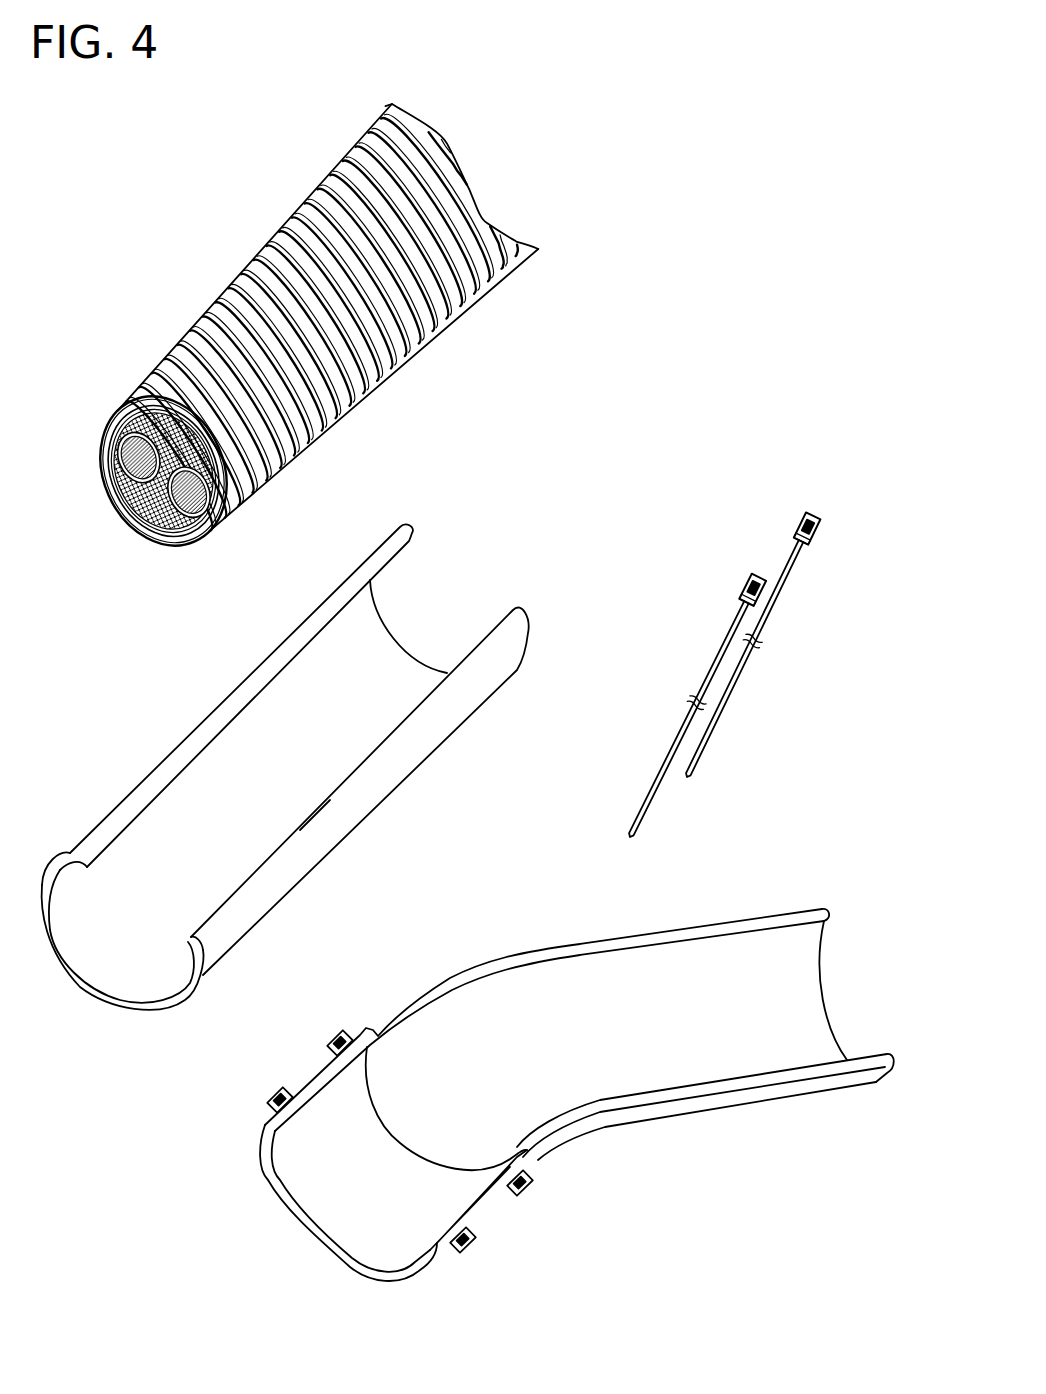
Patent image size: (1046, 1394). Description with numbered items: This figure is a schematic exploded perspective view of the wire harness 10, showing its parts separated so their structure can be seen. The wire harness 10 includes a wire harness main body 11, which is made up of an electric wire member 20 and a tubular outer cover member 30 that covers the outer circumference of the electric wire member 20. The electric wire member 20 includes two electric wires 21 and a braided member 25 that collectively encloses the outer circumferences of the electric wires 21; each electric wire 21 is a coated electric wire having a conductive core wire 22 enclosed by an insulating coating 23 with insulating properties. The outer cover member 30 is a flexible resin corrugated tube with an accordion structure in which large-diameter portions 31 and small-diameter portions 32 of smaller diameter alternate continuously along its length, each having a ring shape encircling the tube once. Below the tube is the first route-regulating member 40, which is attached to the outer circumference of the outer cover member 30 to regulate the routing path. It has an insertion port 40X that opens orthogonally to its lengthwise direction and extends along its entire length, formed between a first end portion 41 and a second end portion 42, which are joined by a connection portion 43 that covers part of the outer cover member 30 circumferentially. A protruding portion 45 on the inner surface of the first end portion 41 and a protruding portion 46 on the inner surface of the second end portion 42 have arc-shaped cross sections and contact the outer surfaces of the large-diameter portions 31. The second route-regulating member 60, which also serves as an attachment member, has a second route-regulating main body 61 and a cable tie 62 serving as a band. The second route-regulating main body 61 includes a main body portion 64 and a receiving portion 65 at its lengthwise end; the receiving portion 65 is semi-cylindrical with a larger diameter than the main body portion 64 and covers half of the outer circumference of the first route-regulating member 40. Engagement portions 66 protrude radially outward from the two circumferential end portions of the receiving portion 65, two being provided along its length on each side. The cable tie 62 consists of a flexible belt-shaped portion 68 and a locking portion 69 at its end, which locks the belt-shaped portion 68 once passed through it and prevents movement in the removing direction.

The wire harness 10 is at (786, 75).
The wire harness main body 11 is at (219, 280).
The electric wire member 20 is at (247, 598).
The electric wire 21 is at (168, 517).
The core wire 22 is at (117, 483).
The insulating coating 23 is at (164, 475).
The braided member 25 is at (197, 530).
The outer cover member 30 is at (32, 340).
The large-diameter portion 31 is at (157, 397).
The small-diameter portion 32 is at (133, 415).
The first route-regulating member 40 is at (455, 753).
The insertion port 40X is at (280, 846).
The first end portion 41 is at (107, 843).
The second end portion 42 is at (212, 915).
The connection portion 43 is at (230, 940).
The protruding portion 45 is at (85, 868).
The protruding portion 46 is at (187, 953).
The second route-regulating member 60 is at (788, 1112).
The second route-regulating main body 61 is at (755, 915).
The cable tie 62 is at (712, 664).
The main body portion 64 is at (672, 932).
The receiving portion 65 is at (333, 1230).
The engagement portion 66 is at (330, 1040).
The belt-shaped portion 68 is at (740, 606).
The locking portion 69 is at (740, 588).